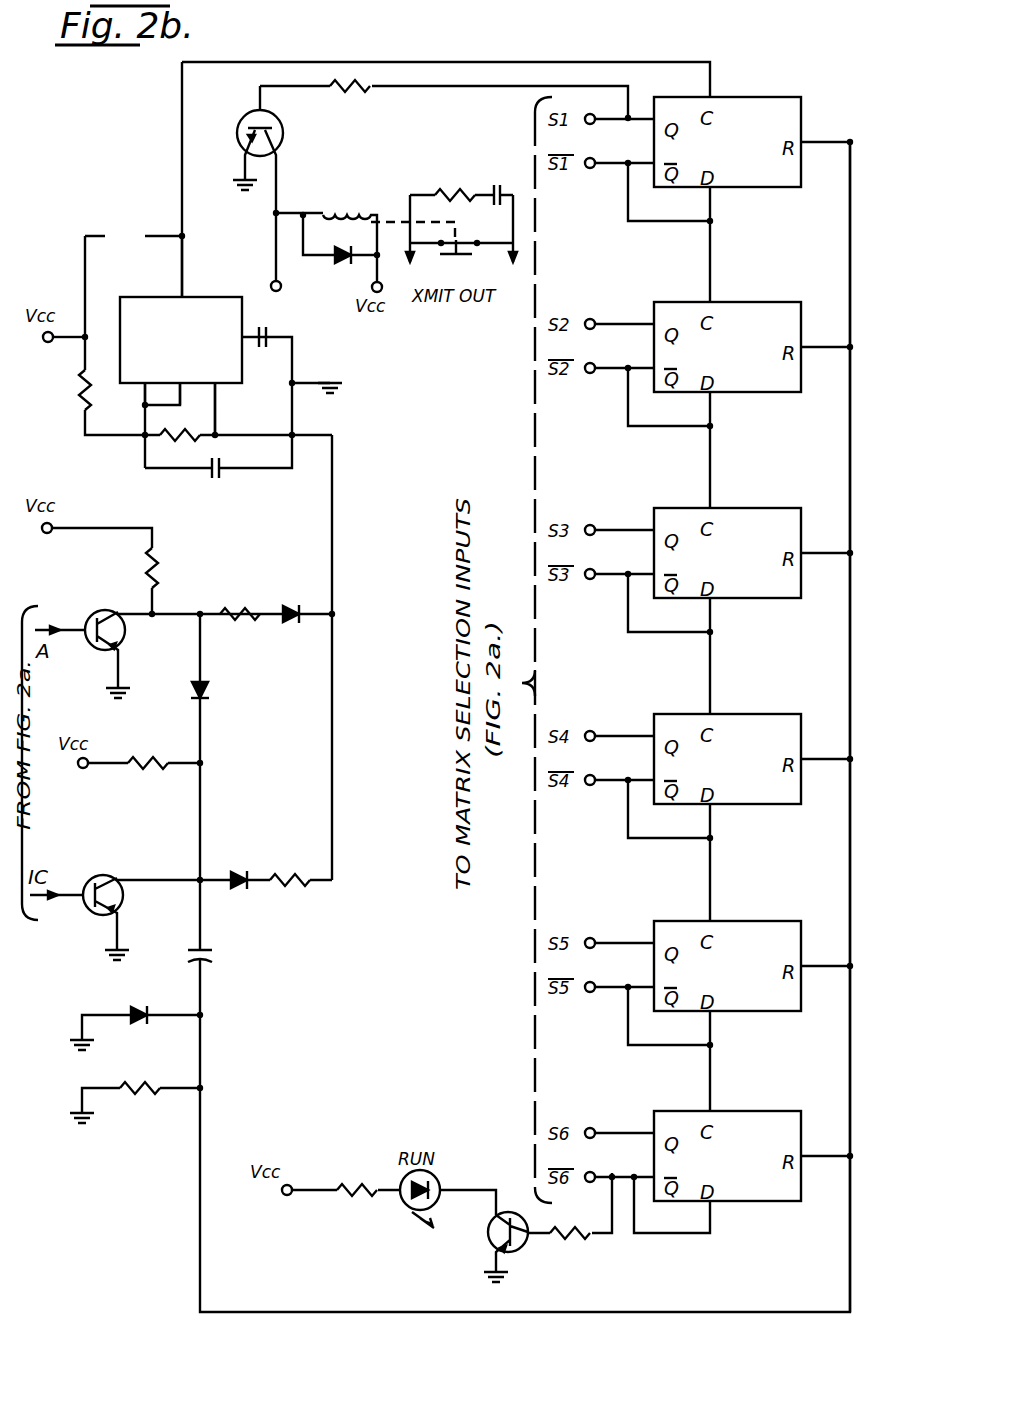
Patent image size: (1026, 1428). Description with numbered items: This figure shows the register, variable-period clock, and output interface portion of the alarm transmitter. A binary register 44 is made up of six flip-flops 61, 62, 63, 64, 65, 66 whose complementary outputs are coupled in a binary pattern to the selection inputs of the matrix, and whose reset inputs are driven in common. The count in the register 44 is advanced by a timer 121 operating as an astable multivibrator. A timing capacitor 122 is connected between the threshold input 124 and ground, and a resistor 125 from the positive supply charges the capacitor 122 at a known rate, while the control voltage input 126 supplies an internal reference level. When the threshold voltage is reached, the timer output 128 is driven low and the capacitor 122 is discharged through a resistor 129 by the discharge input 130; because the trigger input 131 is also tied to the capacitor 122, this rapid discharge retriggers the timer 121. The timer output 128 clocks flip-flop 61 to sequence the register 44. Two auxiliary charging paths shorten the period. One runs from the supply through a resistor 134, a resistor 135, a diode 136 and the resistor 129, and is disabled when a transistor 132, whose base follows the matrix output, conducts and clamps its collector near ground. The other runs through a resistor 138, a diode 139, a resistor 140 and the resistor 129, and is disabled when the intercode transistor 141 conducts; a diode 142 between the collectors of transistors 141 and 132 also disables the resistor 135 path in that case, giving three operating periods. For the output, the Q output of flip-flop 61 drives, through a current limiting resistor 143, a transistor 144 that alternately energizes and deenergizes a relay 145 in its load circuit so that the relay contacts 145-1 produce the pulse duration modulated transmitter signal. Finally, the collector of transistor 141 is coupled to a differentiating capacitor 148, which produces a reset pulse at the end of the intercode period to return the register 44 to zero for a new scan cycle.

The binary register 44 is at (818, 442).
The flip-flop 61 is at (771, 99).
The flip-flop 62 is at (771, 304).
The flip-flop 63 is at (771, 510).
The flip-flop 64 is at (771, 716).
The flip-flop 65 is at (771, 923).
The flip-flop 66 is at (771, 1113).
The timer 121 is at (219, 297).
The timing capacitor 122 is at (223, 471).
The threshold input 124 is at (145, 388).
The resistor 125 is at (80, 390).
The control voltage input 126 is at (244, 340).
The timer output 128 is at (181, 292).
The resistor 129 is at (188, 442).
The discharge input 130 is at (218, 390).
The trigger input 131 is at (181, 390).
The transistor 132 is at (111, 612).
The resistor 134 is at (160, 566).
The resistor 135 is at (242, 607).
The diode 136 is at (290, 624).
The resistor 138 is at (141, 769).
The diode 139 is at (238, 872).
The resistor 140 is at (298, 887).
The intercode transistor 141 is at (112, 876).
The diode 142 is at (212, 692).
The current limiting resistor 143 is at (356, 90).
The transistor 144 is at (246, 117).
The relay 145 is at (345, 218).
The relay contacts 145-1 is at (448, 254).
The differentiating capacitor 148 is at (213, 960).